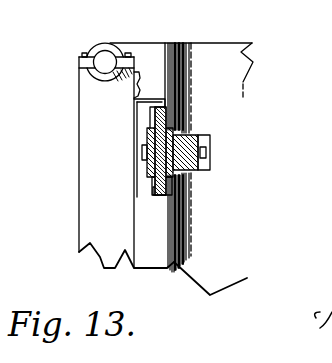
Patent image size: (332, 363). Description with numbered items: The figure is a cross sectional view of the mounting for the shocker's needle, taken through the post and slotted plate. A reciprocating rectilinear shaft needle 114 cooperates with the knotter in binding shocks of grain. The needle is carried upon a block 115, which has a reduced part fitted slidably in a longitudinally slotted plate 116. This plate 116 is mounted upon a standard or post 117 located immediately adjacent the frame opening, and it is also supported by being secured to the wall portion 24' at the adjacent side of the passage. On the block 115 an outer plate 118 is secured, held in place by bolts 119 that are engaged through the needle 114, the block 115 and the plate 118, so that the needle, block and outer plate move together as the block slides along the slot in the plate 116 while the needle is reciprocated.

The wall portion 24' is at (181, 155).
The reciprocating rectilinear shaft needle 114 is at (193, 128).
The block 115 is at (190, 177).
The longitudinally slotted plate 116 is at (150, 119).
The standard or post 117 is at (79, 184).
The outer plate 118 is at (150, 184).
The bolts 119 is at (207, 155).